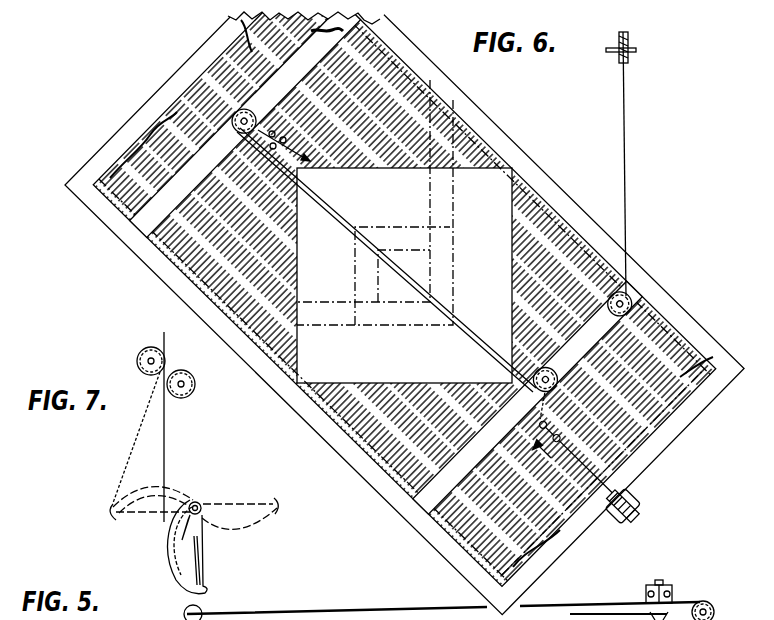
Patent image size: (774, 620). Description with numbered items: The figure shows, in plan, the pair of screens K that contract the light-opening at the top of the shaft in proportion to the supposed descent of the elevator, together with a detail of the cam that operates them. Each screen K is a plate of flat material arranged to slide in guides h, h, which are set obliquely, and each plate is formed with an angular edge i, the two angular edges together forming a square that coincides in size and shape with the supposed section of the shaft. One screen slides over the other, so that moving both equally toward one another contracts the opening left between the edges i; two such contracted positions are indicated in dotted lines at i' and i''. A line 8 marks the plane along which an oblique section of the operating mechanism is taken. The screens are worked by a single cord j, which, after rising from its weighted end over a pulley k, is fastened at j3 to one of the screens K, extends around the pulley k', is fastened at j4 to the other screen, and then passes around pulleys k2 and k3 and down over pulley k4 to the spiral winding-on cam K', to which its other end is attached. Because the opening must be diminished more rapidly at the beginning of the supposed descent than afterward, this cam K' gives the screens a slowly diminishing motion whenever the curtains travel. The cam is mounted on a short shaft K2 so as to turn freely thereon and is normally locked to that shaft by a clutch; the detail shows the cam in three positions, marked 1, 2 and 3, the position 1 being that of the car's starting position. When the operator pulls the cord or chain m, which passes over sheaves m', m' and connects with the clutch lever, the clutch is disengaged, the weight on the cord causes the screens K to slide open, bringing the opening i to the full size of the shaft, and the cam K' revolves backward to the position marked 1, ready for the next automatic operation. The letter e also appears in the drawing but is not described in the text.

In FIG. 6, the guides h is at (572, 210).
In FIG. 6, the screens K is at (404, 293).
In FIG. 5, the screens K is at (635, 600).
In FIG. 6, the angular edge i is at (407, 274).
In FIG. 6, the contracted position i' is at (375, 223).
In FIG. 6, the contracted position i'' is at (367, 191).
In FIG. 6, the starting position 1 is at (418, 300).
In FIG. 7, the starting position 1 is at (144, 503).
In FIG. 6, the cam position 2 is at (387, 257).
In FIG. 7, the cam position 2 is at (172, 588).
In FIG. 7, the cam position 3 is at (246, 513).
In FIG. 6, the guide e is at (419, 123).
In FIG. 6, the cord j is at (577, 463).
In FIG. 7, the cord j is at (154, 427).
In FIG. 6, the fastening point j3 is at (546, 426).
In FIG. 6, the fastening point j4 is at (284, 142).
In FIG. 6, the pulley k is at (630, 506).
In FIG. 6, the pulley k' is at (229, 121).
In FIG. 6, the pulley k2 is at (554, 393).
In FIG. 6, the pulley k3 is at (626, 318).
In FIG. 6, the pulley k4 is at (627, 53).
In FIG. 7, the spiral winding-on cam K' is at (199, 547).
In FIG. 7, the short shaft K2 is at (200, 504).
In FIG. 6, the section line 8 is at (228, 116).
In FIG. 5, the cord or chain m is at (442, 606).
In FIG. 5, the sheaves m' is at (717, 602).